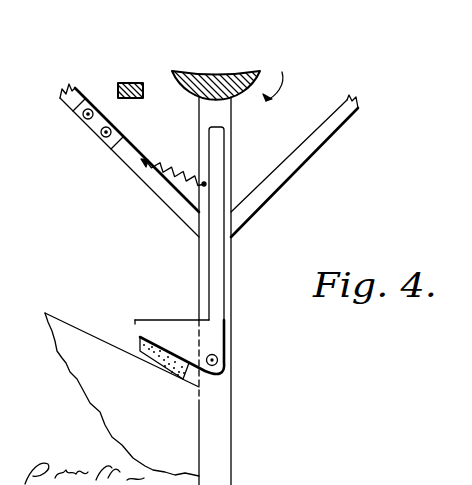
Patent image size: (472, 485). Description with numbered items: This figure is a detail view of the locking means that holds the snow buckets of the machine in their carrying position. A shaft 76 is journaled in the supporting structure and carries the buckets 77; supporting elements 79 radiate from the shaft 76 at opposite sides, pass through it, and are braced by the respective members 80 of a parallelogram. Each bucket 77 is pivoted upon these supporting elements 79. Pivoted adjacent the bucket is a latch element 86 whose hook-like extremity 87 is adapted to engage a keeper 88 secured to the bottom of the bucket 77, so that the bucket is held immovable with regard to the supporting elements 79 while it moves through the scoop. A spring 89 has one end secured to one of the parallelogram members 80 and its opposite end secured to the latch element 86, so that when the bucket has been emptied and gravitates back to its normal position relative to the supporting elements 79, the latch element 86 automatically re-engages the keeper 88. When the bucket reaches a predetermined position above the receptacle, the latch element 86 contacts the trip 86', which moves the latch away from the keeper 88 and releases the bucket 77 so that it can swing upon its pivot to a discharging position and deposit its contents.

The shaft 76 is at (240, 68).
The bucket 77 is at (103, 392).
The supporting element 79 is at (217, 408).
The member of a parallelogram 80 is at (130, 153).
The latch element 86 is at (208, 229).
The trip 86' is at (124, 65).
The hook-like extremity 87 is at (134, 330).
The keeper 88 is at (138, 350).
The spring 89 is at (177, 190).